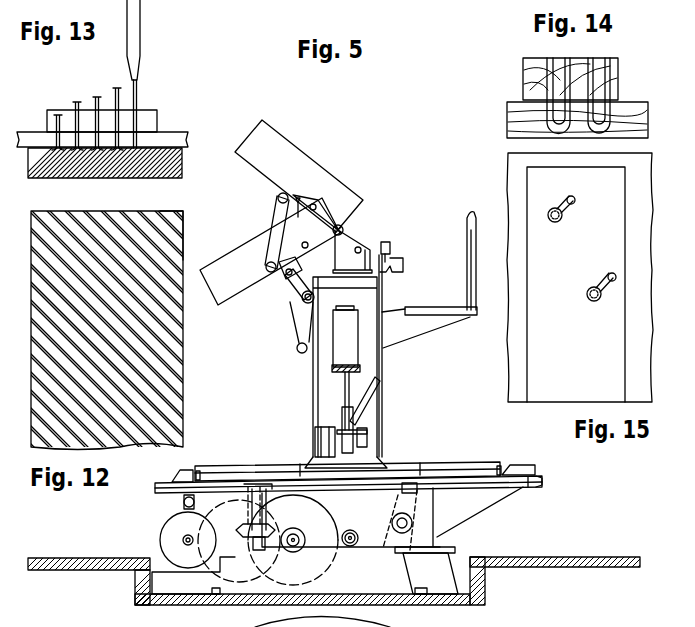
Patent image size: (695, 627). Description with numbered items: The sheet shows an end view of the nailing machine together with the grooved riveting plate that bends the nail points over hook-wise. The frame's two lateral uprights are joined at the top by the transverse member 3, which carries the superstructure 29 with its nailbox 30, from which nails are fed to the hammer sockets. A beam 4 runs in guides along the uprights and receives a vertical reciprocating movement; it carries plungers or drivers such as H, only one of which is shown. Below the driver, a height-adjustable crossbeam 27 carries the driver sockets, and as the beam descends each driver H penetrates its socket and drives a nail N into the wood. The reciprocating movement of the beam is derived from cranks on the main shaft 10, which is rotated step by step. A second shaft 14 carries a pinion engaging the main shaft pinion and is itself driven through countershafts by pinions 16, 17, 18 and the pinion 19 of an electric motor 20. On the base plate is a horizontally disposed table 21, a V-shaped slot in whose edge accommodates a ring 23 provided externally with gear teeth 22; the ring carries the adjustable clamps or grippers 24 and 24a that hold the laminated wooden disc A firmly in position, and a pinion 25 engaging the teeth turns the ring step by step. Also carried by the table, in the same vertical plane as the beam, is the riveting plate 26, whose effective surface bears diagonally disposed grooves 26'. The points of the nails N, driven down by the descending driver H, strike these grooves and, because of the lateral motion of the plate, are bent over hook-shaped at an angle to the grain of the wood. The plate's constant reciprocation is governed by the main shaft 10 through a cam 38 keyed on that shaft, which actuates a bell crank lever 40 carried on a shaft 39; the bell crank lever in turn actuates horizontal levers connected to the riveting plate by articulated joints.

In FIG. 5, the transverse member 3 is at (381, 283).
In FIG. 5, the beam 4 is at (342, 357).
In FIG. 13, the driver H is at (135, 47).
In FIG. 5, the driver H is at (346, 388).
In FIG. 13, the nail N is at (138, 94).
In FIG. 14, the nail N is at (618, 83).
In FIG. 15, the nail N is at (582, 248).
In FIG. 5, the main shaft 10 is at (353, 547).
In FIG. 5, the second shaft 14 is at (296, 548).
In FIG. 5, the pinion 16 is at (320, 567).
In FIG. 5, the pinion 17 is at (232, 540).
In FIG. 5, the pinion 18 is at (197, 500).
In FIG. 5, the pinion of electric motor 19 is at (182, 540).
In FIG. 5, the electric motor 20 is at (170, 530).
In FIG. 5, the table 21 is at (473, 488).
In FIG. 5, the gear teeth 22 is at (543, 484).
In FIG. 5, the ring 23 is at (529, 488).
In FIG. 5, the clamp 24 is at (172, 474).
In FIG. 5, the clamp 24a is at (533, 471).
In FIG. 5, the pinion 25 is at (267, 495).
In FIG. 13, the riveting plate 26 is at (120, 160).
In FIG. 12, the riveting plate 26 is at (206, 330).
In FIG. 12, the grooves 26' is at (192, 306).
In FIG. 5, the crossbeam 27 is at (335, 426).
In FIG. 5, the superstructure 29 is at (343, 262).
In FIG. 5, the nailbox 30 is at (344, 212).
In FIG. 5, the cam 38 is at (352, 530).
In FIG. 5, the shaft 39 is at (400, 529).
In FIG. 5, the bell crank lever 40 is at (398, 502).
In FIG. 5, the laminated wooden disc A is at (483, 474).